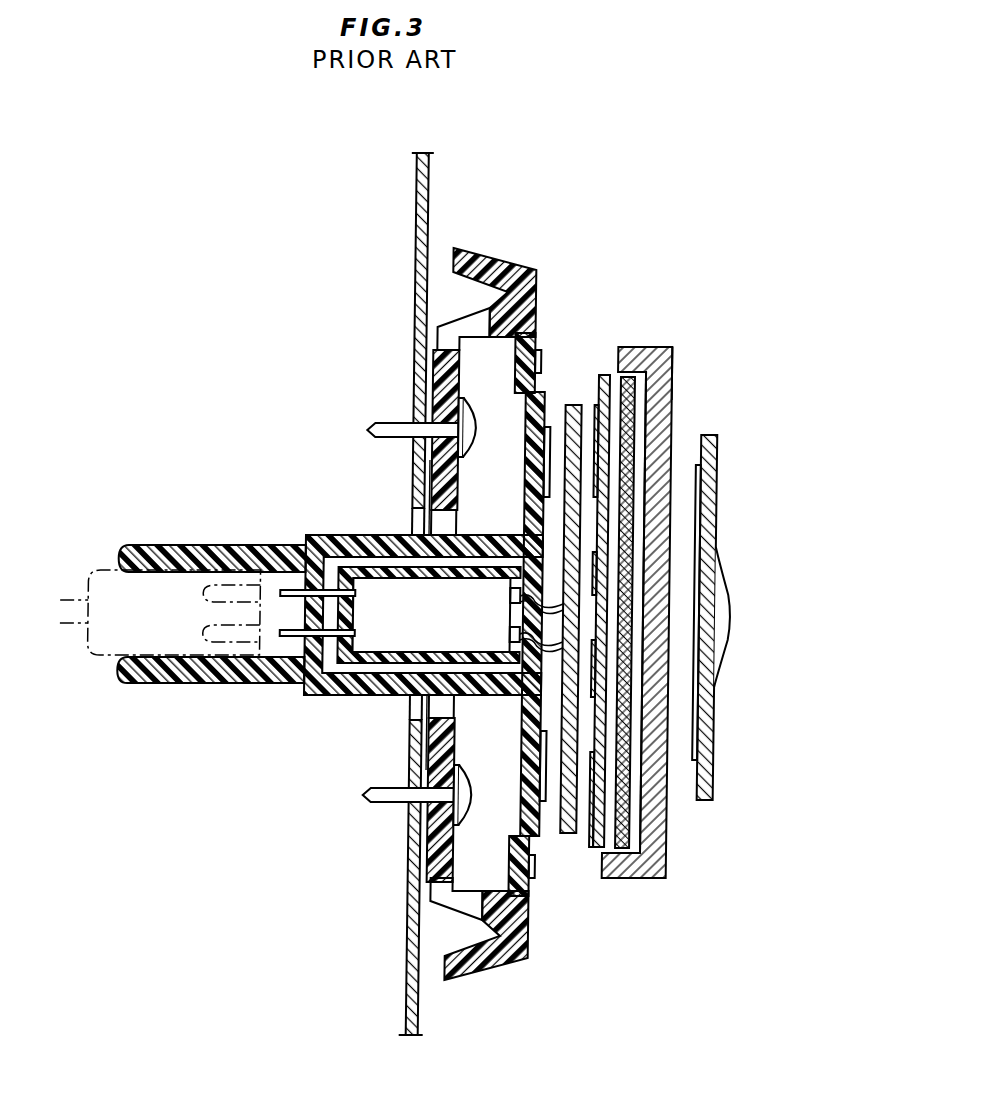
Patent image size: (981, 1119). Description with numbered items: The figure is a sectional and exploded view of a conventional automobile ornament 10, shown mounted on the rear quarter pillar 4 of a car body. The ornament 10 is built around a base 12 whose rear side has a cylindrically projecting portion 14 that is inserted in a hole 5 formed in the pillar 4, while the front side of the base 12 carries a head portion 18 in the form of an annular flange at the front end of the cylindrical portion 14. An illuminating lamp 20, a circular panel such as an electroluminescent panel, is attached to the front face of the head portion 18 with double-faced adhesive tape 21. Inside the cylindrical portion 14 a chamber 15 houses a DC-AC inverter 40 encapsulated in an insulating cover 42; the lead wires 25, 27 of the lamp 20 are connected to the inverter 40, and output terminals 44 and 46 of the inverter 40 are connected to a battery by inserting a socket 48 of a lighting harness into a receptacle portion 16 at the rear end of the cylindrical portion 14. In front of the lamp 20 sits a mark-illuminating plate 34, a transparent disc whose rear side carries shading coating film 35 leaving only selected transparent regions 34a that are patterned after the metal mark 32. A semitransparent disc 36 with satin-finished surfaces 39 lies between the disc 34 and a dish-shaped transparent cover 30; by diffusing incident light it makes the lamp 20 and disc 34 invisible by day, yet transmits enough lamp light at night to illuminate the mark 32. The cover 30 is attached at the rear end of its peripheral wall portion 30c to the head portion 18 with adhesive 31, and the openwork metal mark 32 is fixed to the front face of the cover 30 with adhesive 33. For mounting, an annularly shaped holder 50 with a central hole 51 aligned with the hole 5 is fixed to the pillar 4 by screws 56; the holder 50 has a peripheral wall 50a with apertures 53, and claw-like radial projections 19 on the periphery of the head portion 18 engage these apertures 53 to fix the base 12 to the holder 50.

The rear quarter pillar 4 is at (424, 177).
The hole 5 is at (412, 520).
The automobile ornament 10 is at (678, 350).
The base 12 is at (318, 702).
The cylindrically projecting portion 14 is at (370, 692).
The chamber 15 is at (350, 676).
The receptacle portion 16 is at (173, 548).
The head portion 18 is at (527, 800).
The claw-like radial projections 19 is at (526, 330).
The illuminating lamp 20 is at (542, 430).
The double-faced adhesive tape 21 is at (548, 802).
The lead wire 25 is at (510, 622).
The lead wire 27 is at (515, 655).
The transparent cover 30 is at (666, 447).
The peripheral wall portion 30c is at (637, 350).
The adhesive 31 is at (537, 352).
The metal mark 32 is at (710, 742).
The adhesive 33 is at (694, 760).
The mark-illuminating plate 34 is at (574, 403).
The transparent regions 34a is at (597, 503).
The shading coating film 35 is at (578, 838).
The semitransparent disc 36 is at (641, 412).
The satin-finished surfaces 39 is at (633, 437).
The DC-AC inverter 40 is at (364, 590).
The insulating cover 42 is at (384, 572).
The output terminal 44 is at (284, 590).
The output terminal 46 is at (285, 638).
The socket 48 is at (108, 572).
The holder 50 is at (457, 383).
The peripheral wall 50a is at (458, 884).
The central hole 51 is at (458, 527).
The apertures 53 is at (455, 326).
The screws 56 is at (393, 421).